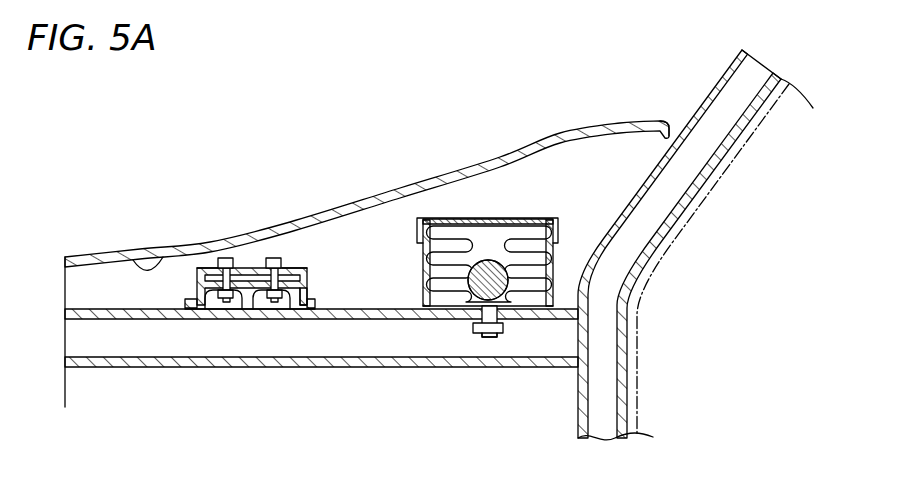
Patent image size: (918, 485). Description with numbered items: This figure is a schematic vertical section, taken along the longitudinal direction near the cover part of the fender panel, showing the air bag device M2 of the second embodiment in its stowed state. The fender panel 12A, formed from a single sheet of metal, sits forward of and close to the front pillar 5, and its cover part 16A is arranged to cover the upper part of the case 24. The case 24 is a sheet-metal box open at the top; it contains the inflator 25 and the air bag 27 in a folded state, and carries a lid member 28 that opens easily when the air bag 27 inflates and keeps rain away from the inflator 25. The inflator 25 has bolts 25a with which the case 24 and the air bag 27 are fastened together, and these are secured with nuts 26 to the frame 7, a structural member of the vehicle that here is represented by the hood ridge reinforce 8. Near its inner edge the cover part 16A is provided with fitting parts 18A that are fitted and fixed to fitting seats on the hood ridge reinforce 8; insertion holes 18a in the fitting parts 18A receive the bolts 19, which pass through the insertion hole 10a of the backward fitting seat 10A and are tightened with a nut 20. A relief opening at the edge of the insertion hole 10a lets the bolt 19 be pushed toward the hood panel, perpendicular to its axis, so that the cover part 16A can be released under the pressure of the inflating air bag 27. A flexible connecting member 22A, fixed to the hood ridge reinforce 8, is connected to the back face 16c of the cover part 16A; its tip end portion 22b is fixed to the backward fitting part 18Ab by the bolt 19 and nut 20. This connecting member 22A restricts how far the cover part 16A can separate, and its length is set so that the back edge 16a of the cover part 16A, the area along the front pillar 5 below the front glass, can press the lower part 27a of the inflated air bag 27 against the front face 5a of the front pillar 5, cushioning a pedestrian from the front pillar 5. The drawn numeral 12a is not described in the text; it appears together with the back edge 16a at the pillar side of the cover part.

The air bag device M2 is at (245, 251).
The front pillar 5 is at (695, 229).
The front face 5a is at (700, 108).
The frame 7 is at (350, 385).
The hood ridge reinforce 8 is at (108, 311).
The fitting seat 10A is at (197, 302).
The insertion hole 10a is at (207, 292).
The fender panel 12A is at (400, 191).
The panel end portion 12a is at (655, 110).
The cover part 16A is at (367, 175).
The back edge 16a is at (604, 83).
The back face 16c is at (130, 257).
The fitting parts 18A is at (208, 227).
The fitting part 18Ab is at (195, 266).
The insertion holes 18a is at (207, 266).
The bolts 19 is at (227, 257).
The nut 20 is at (240, 300).
The flexible connecting member 22A is at (303, 265).
The tip end portion 22b is at (308, 268).
The case 24 is at (556, 266).
The inflator 25 is at (452, 312).
The bolts 25a is at (484, 338).
The nuts 26 is at (502, 326).
The air bag 27 is at (433, 272).
The lower part 27a is at (630, 459).
The lid member 28 is at (553, 217).